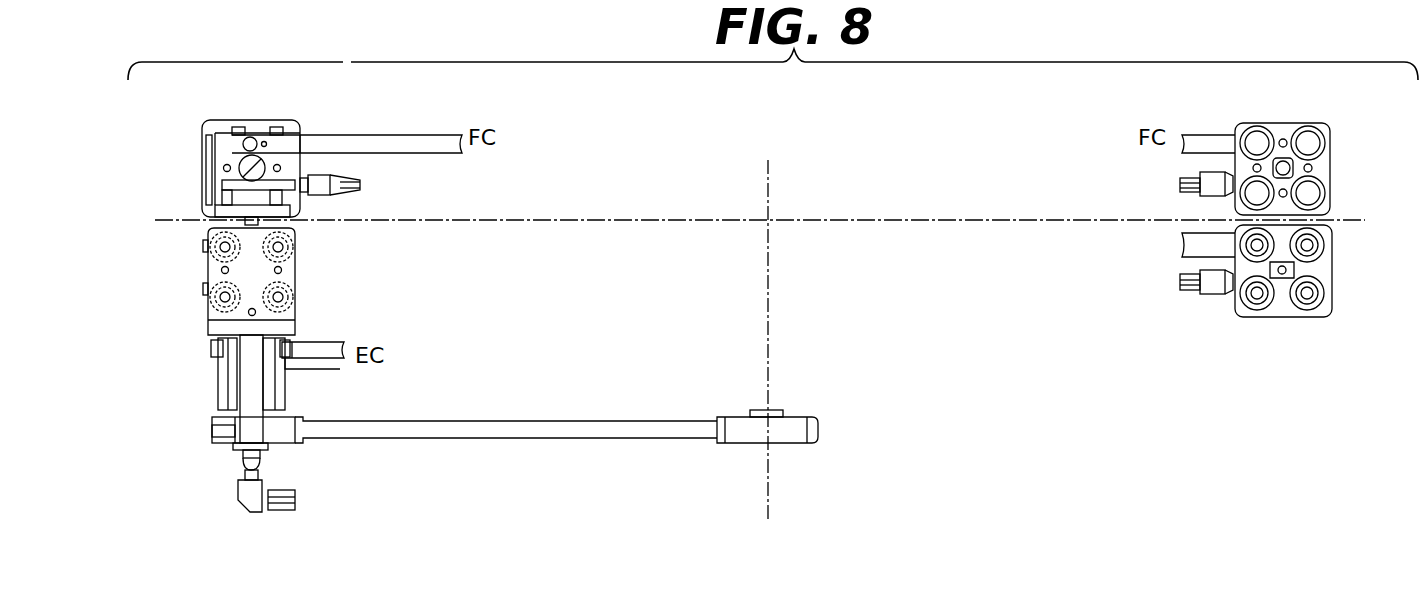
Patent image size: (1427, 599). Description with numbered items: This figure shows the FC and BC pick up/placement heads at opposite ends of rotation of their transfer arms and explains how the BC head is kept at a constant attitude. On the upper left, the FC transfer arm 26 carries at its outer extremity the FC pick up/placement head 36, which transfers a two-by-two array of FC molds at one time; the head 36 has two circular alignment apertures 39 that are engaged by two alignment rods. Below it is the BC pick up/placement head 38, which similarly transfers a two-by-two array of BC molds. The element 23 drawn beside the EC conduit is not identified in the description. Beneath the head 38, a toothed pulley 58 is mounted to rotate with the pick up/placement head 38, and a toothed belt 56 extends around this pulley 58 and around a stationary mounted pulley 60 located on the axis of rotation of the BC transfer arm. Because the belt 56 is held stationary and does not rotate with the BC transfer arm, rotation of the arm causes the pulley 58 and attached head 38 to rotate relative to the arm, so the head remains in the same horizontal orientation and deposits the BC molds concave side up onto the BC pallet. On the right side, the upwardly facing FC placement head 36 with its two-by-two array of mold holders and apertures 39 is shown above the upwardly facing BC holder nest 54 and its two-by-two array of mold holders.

The electrical conduit 23 is at (318, 342).
The FC transfer arm 26 is at (446, 154).
The FC pick up/placement head 36 is at (198, 184).
The BC pick up/placement head 38 is at (200, 264).
The circular alignment apertures 39 is at (223, 168).
The BC holder nest 54 is at (1342, 267).
The toothed belt 56 is at (513, 440).
The toothed pulley 58 is at (212, 424).
The stationary mounted pulley 60 is at (816, 442).